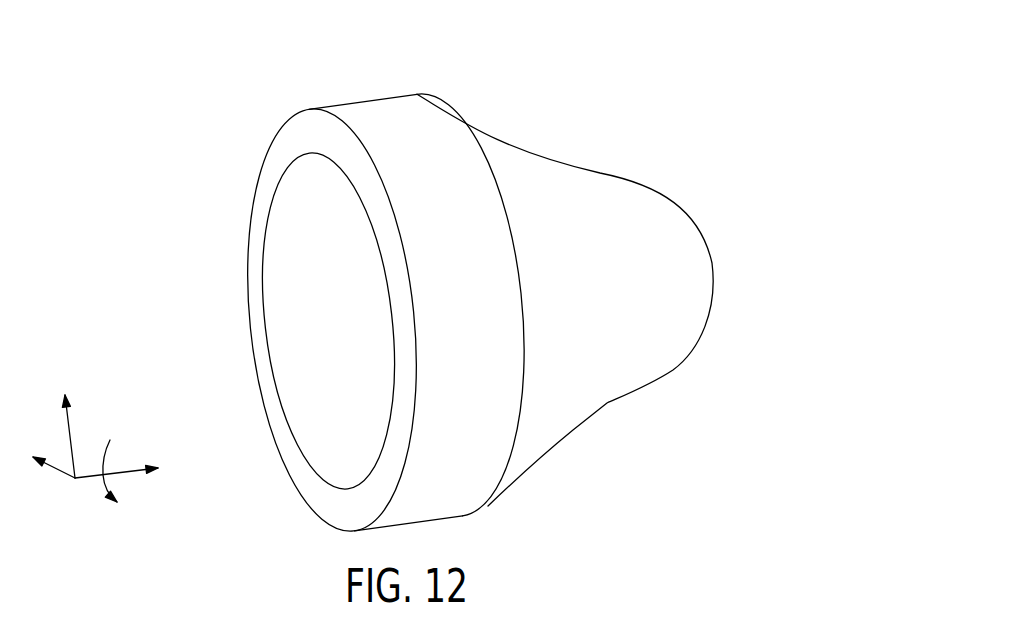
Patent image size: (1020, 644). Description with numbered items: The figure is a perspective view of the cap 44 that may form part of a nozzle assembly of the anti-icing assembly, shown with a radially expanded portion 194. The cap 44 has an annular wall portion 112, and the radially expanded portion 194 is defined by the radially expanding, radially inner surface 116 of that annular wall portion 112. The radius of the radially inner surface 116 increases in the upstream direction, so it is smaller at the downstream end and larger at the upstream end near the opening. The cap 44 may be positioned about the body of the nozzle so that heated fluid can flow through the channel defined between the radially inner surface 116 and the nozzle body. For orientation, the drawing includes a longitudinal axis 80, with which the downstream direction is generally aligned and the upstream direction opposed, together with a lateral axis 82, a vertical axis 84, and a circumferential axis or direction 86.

The cap 44 is at (401, 291).
The radially inner surface 116 is at (307, 227).
The radially expanded portion 194 is at (238, 302).
The annular wall portion 112 is at (520, 400).
The longitudinal axis 80 is at (133, 470).
The lateral axis 82 is at (63, 470).
The vertical axis 84 is at (73, 442).
The circumferential axis 86 is at (110, 440).